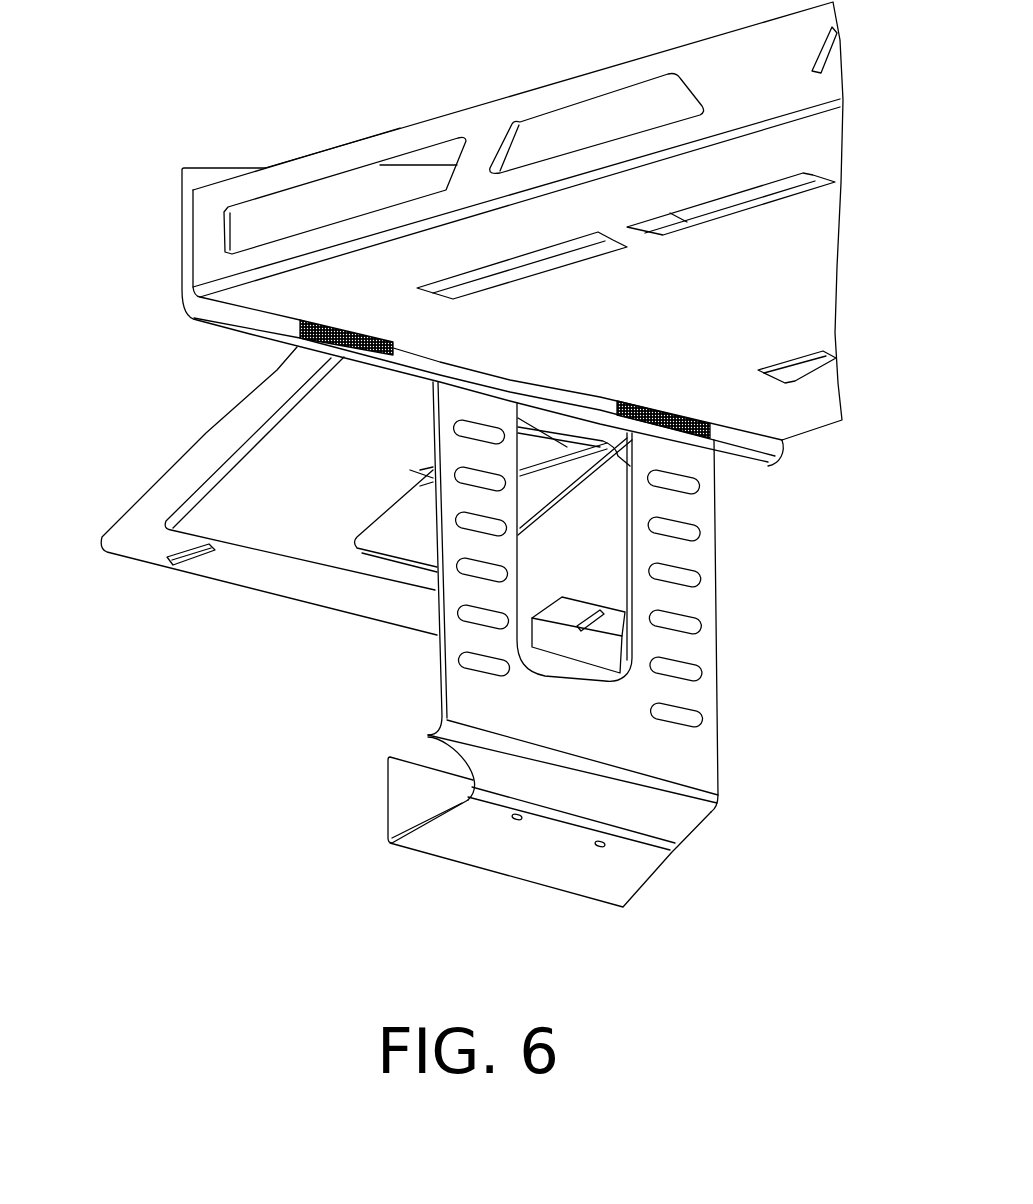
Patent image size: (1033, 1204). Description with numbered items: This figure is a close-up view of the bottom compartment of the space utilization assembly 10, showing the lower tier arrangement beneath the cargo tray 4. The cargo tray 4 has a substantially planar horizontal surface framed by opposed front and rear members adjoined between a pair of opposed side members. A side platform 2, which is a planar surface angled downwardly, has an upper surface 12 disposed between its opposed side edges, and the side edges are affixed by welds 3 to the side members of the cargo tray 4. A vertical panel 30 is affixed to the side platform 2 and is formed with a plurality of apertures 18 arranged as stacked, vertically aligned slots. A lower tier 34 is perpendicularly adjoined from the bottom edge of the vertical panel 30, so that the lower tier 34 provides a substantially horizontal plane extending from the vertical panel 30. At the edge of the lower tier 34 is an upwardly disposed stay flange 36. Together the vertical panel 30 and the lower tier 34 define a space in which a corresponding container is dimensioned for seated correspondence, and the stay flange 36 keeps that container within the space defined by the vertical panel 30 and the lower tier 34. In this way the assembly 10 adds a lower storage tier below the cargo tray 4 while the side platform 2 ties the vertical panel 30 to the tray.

The space utilization assembly 10 is at (333, 68).
The cargo tray 4 is at (297, 160).
The side platform 2 is at (216, 434).
The upper surface 12 is at (167, 558).
The welds 3 is at (425, 371).
The apertures 18 is at (484, 568).
The vertical panel 30 is at (717, 653).
The lower tier 34 is at (390, 843).
The stay flange 36 is at (412, 787).